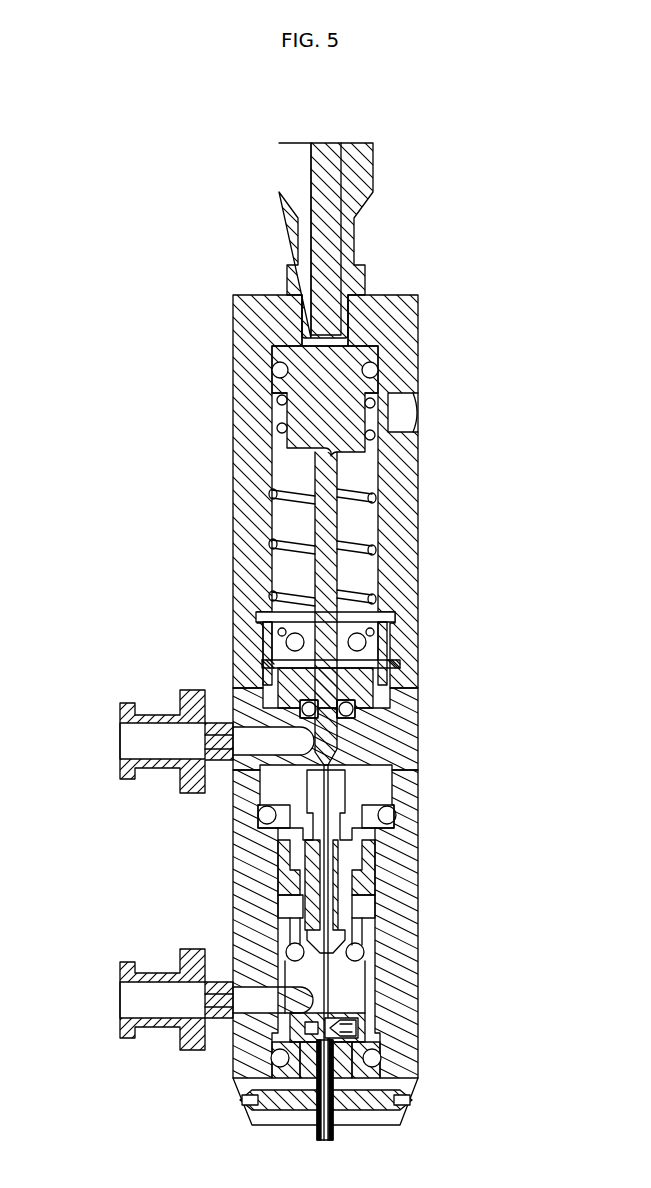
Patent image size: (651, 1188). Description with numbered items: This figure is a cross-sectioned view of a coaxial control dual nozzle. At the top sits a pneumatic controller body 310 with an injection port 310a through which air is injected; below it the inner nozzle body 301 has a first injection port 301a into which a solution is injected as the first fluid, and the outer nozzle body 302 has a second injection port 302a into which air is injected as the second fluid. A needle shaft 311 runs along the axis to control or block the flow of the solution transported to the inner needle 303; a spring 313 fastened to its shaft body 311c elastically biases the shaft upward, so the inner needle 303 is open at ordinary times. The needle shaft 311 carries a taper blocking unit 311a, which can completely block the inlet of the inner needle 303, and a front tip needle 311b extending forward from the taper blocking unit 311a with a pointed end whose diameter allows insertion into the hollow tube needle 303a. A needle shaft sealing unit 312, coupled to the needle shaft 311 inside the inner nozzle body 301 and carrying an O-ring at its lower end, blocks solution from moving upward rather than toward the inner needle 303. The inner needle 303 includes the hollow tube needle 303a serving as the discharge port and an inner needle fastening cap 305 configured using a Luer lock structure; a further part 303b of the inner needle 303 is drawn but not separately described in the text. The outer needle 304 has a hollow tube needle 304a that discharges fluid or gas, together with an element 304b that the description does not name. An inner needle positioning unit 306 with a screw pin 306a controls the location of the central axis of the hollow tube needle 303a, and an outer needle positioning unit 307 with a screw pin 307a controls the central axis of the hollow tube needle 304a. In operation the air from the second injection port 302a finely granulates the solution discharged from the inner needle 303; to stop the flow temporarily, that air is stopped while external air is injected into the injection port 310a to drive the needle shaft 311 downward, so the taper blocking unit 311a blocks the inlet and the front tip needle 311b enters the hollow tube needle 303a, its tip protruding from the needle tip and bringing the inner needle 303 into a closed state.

The injection port 310a is at (338, 132).
The pneumatic controller body 310 is at (418, 322).
The spring 313 is at (372, 497).
The needle shaft 311 is at (529, 563).
The shaft body 311c is at (338, 575).
The taper blocking unit 311a is at (340, 762).
The front tip needle 311b is at (328, 782).
The needle shaft sealing unit 312 is at (350, 688).
The inner nozzle body 301 is at (418, 720).
The injection port 301a is at (118, 741).
The inner needle fastening cap 305 is at (365, 855).
The outer nozzle body 302 is at (418, 880).
The inner needle 303 is at (528, 902).
The valve seat sleeve 303b is at (355, 973).
The hollow tube needle 303a is at (335, 1003).
The inner needle positioning unit 306 is at (372, 1015).
The screw pin 306a is at (350, 1026).
The injection port 302a is at (118, 1002).
The outer needle 304 is at (528, 1038).
The nozzle seal 304b is at (338, 1067).
The outer needle positioning unit 307 is at (418, 1080).
The screw pin 307a is at (380, 1102).
The hollow tube needle 304a is at (333, 1135).